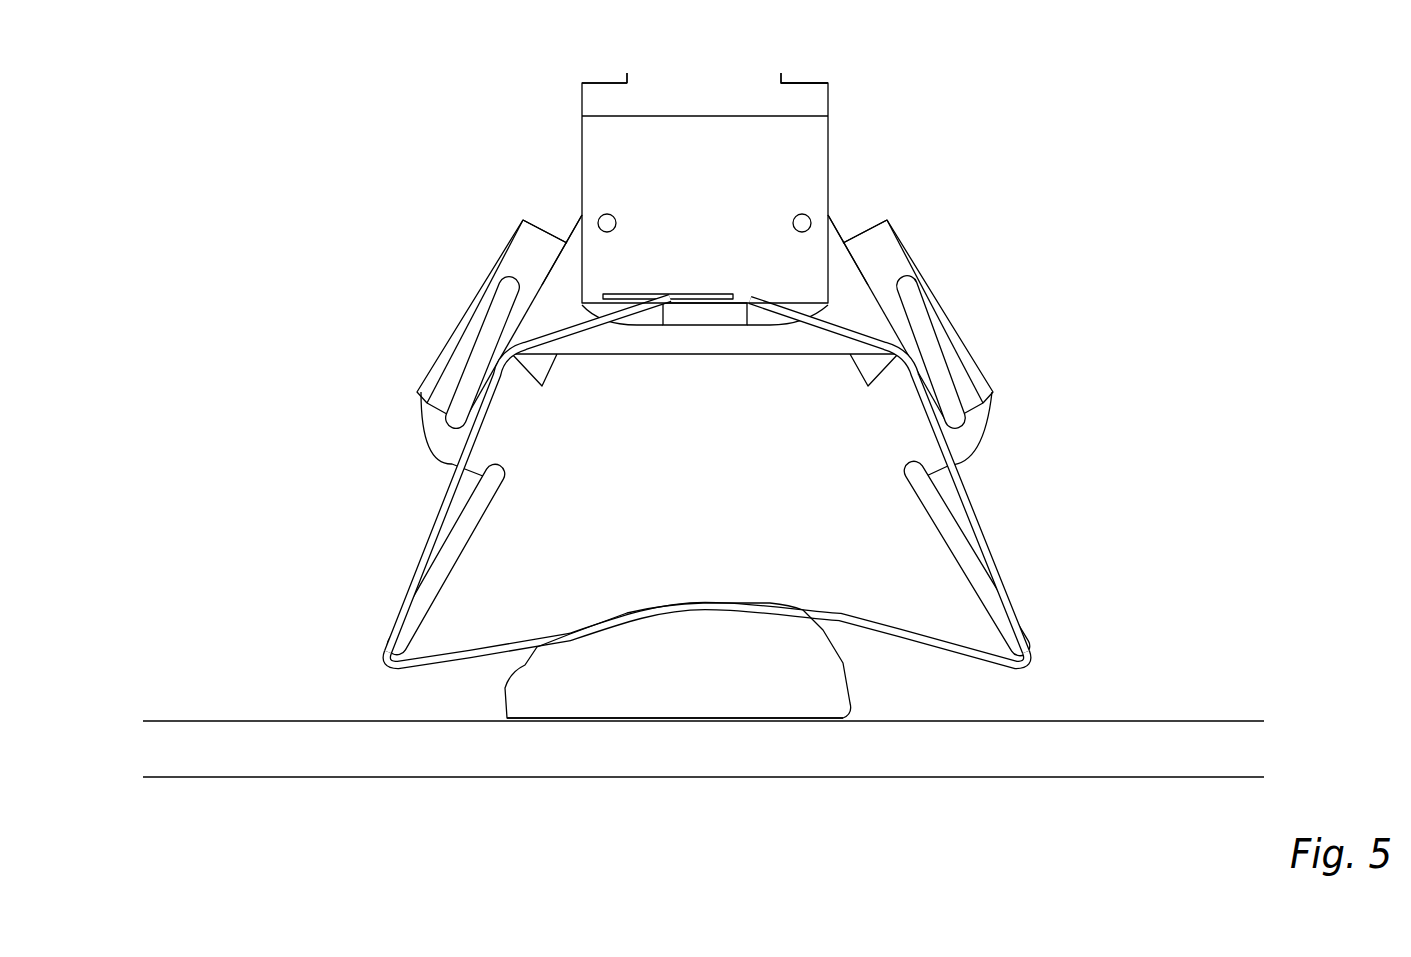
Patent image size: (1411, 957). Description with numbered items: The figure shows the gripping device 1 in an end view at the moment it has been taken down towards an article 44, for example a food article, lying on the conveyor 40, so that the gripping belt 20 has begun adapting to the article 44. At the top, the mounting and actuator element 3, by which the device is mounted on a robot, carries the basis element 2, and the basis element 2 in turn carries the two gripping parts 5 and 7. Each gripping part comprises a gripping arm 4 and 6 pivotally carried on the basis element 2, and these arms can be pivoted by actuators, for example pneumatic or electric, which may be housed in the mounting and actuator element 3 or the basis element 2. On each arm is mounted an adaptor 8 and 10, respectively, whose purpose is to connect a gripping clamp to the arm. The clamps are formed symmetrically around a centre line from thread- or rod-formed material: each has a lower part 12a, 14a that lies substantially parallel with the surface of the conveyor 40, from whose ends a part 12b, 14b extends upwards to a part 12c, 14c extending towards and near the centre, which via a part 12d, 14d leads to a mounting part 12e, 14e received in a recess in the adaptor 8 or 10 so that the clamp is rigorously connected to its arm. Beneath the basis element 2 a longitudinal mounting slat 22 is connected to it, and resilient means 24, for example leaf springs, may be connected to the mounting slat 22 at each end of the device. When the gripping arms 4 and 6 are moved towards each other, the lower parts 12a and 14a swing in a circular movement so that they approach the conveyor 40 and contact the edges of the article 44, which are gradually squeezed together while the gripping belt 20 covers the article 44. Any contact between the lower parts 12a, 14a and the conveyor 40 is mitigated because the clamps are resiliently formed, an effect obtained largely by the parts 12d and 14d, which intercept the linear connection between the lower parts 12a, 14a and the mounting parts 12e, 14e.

The gripping device 1 is at (1130, 200).
The basis element 2 is at (828, 148).
The mounting and actuator element 3 is at (807, 83).
The gripping arm 4 is at (568, 233).
The gripping part 5 is at (348, 505).
The gripping arm 6 is at (837, 236).
The gripping part 7 is at (1087, 420).
The adaptor 8 is at (463, 308).
The adaptor 10 is at (918, 261).
The lower part of gripping clamp 12a is at (436, 662).
The upward extending part of gripping clamp 12b is at (427, 573).
The inward extending part of gripping clamp 12c is at (510, 472).
The part of gripping clamp leading to mounting part 12d is at (447, 462).
The mounting part of gripping clamp 12e is at (447, 369).
The lower part of gripping clamp 14a is at (985, 662).
The upward extending part of gripping clamp 14b is at (973, 547).
The inward extending part of gripping clamp 14c is at (905, 474).
The part of gripping clamp leading to mounting part 14d is at (973, 458).
The mounting part of gripping clamp 14e is at (940, 326).
The gripping belt 20 is at (910, 642).
The mounting slat 22 is at (660, 315).
The resilient means 24 is at (748, 357).
The conveyor 40 is at (1158, 721).
The article 44 is at (503, 690).